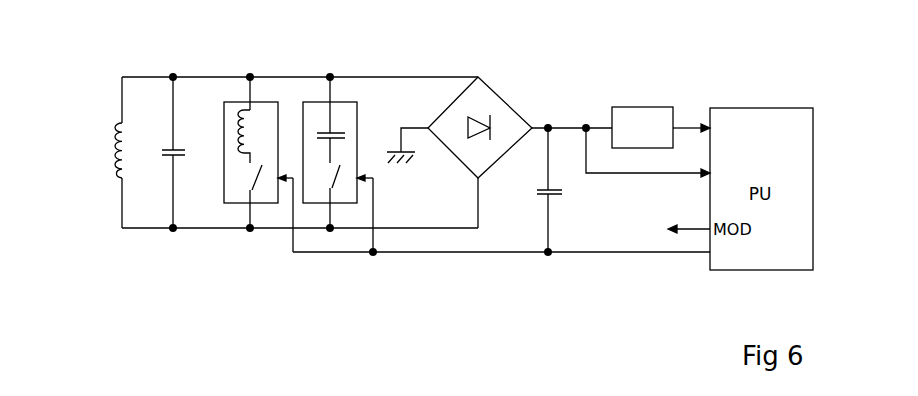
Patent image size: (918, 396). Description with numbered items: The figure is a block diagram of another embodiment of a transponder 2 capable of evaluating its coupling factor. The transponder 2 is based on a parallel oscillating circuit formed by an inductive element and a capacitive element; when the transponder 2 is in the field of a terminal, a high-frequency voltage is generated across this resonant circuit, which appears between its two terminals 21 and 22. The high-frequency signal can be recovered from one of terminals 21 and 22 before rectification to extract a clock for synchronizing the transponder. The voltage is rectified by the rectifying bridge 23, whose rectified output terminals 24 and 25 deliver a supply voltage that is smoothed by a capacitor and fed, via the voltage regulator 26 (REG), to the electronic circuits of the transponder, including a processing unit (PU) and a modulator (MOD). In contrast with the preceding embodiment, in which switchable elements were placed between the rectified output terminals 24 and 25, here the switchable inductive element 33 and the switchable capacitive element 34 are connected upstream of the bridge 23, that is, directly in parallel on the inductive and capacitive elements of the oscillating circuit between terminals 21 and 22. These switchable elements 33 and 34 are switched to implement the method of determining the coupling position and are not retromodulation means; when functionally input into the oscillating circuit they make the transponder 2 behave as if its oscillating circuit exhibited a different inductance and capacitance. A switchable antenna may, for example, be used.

The transponder 2 is at (422, 307).
The terminal 21 is at (176, 74).
The terminal 22 is at (176, 232).
The rectifying bridge 23 is at (503, 102).
The rectified output terminal 24 is at (548, 122).
The rectified output terminal 25 is at (549, 258).
The voltage regulator 26 is at (650, 107).
The switchable inductive element 33 is at (278, 110).
The switchable capacitive element 34 is at (357, 110).